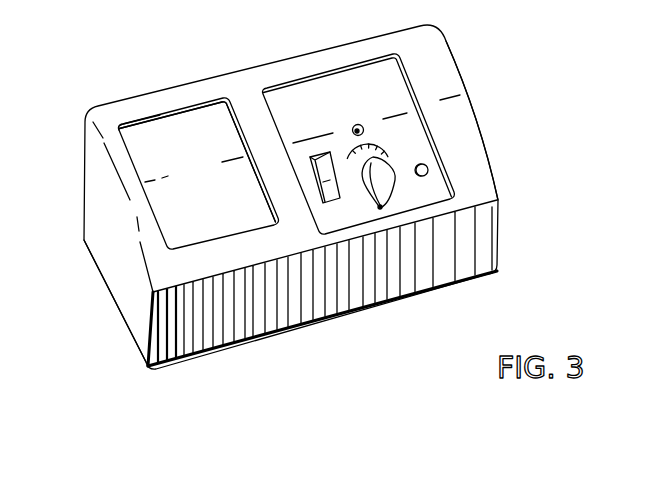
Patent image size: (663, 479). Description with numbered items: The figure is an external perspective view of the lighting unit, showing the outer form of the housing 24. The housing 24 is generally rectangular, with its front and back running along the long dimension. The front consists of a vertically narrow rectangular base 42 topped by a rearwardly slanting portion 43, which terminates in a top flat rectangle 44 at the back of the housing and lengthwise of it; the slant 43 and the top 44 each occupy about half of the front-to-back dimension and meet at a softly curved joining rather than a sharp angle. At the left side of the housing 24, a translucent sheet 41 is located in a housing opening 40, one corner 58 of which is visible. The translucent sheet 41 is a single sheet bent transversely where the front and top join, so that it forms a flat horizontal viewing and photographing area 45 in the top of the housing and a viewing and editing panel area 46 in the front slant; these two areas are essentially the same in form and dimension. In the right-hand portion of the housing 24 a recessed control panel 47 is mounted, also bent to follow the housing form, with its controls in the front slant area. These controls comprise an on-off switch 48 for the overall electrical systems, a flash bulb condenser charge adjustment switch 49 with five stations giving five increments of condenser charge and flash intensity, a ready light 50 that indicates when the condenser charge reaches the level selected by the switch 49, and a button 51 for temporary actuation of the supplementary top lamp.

The housing 24 is at (467, 84).
The housing opening 40 is at (121, 119).
The translucent sheet 41 is at (186, 127).
The rectangular base 42 is at (488, 237).
The rearwardly slanting portion 43 is at (479, 150).
The top flat rectangle 44 is at (438, 57).
The viewing and photographing area 45 is at (141, 148).
The viewing and editing panel area 46 is at (165, 225).
The recessed control panel 47 is at (323, 88).
The on-off switch 48 is at (340, 200).
The flash bulb condenser charge adjustment switch 49 is at (393, 185).
The ready light 50 is at (366, 124).
The button 51 is at (430, 170).
The corner of the housing opening 58 is at (252, 146).